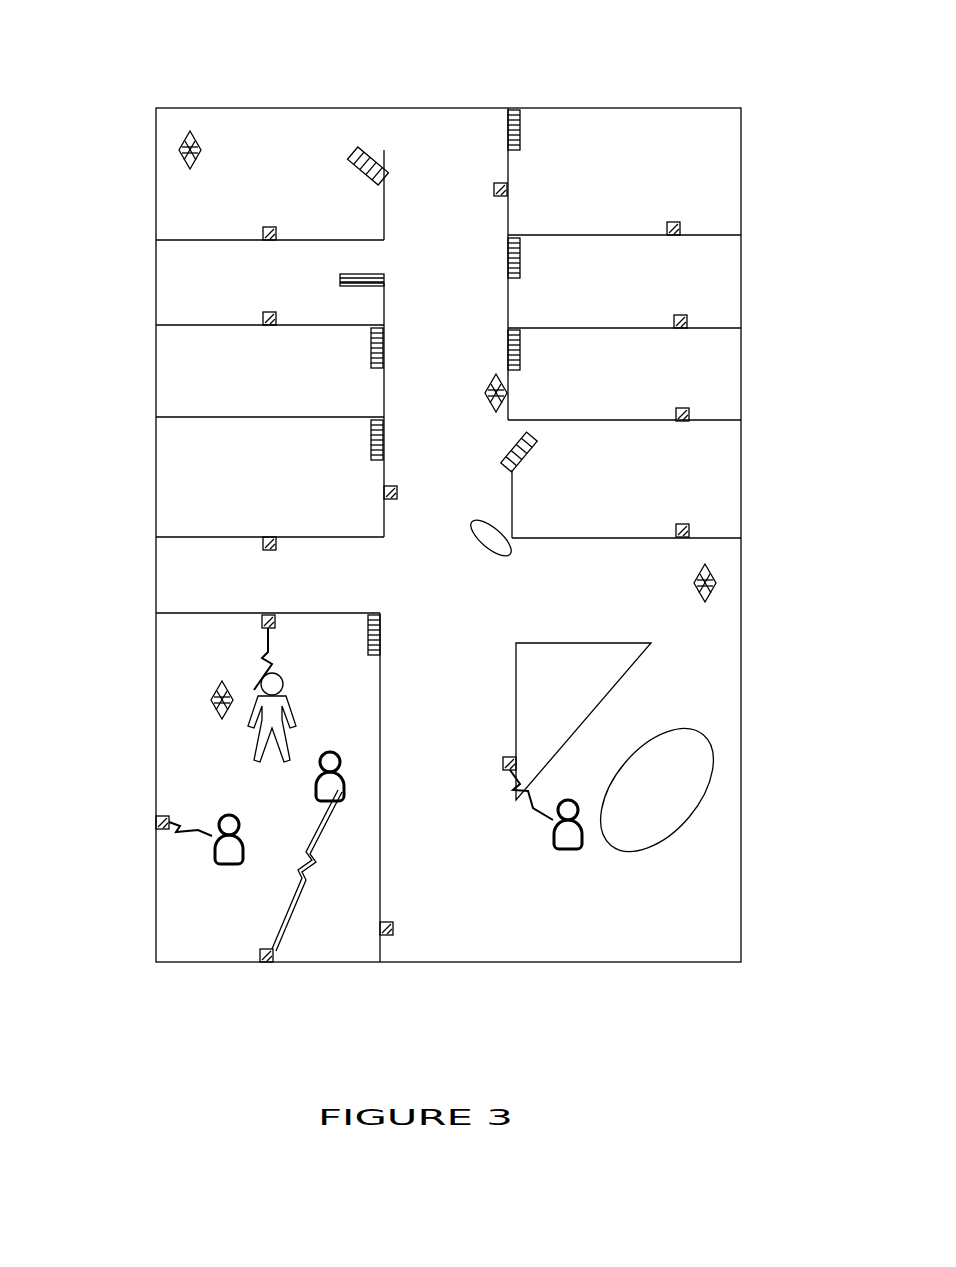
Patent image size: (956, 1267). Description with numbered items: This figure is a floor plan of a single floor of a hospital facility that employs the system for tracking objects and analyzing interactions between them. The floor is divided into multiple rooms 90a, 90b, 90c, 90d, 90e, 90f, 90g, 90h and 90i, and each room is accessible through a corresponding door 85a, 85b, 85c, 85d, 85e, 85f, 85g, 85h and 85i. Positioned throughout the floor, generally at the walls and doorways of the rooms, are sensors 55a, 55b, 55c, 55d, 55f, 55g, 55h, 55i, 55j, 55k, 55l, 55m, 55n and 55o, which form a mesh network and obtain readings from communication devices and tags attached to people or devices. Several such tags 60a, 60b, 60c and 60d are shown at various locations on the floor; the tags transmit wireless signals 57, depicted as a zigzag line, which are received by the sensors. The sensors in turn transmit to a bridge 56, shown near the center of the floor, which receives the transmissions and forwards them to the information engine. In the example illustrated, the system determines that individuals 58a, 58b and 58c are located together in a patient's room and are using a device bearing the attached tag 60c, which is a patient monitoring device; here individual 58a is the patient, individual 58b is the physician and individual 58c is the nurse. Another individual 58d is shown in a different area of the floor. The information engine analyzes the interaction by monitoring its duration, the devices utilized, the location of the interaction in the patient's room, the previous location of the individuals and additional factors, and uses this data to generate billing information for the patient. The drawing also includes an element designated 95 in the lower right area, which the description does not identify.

The room 90a is at (257, 153).
The room 90b is at (600, 150).
The room 90c is at (215, 255).
The room 90d is at (605, 292).
The room 90e is at (222, 362).
The room 90f is at (605, 387).
The room 90g is at (222, 440).
The room 90h is at (615, 447).
The room 90i is at (235, 750).
The door 85a is at (370, 145).
The door 85b is at (516, 115).
The door 85c is at (340, 281).
The door 85d is at (520, 255).
The door 85e is at (371, 345).
The door 85f is at (520, 350).
The door 85g is at (371, 435).
The door 85h is at (530, 455).
The door 85i is at (368, 633).
The sensor 55a is at (262, 233).
The sensor 55b is at (678, 225).
The sensor 55c is at (262, 318).
The sensor 55d is at (687, 318).
The sensor 55f is at (689, 412).
The sensor 55g is at (262, 545).
The sensor 55h is at (689, 527).
The sensor 55i is at (262, 620).
The sensor 55j is at (384, 492).
The sensor 55k is at (156, 820).
The sensor 55l is at (260, 955).
The sensor 55m is at (388, 936).
The sensor 55n is at (516, 763).
The sensor 55o is at (500, 183).
The tag 60a is at (178, 150).
The tag 60b is at (494, 375).
The tag 60c is at (210, 700).
The tag 60d is at (716, 583).
The bridge 56 is at (510, 542).
The wireless signals 57 is at (292, 900).
The hazard zone 95 is at (675, 690).
The individual 58a is at (272, 712).
The individual 58b is at (348, 774).
The individual 58c is at (209, 848).
The individual 58d is at (551, 820).